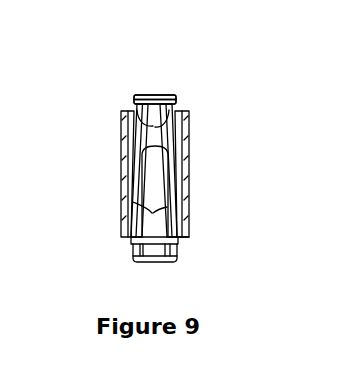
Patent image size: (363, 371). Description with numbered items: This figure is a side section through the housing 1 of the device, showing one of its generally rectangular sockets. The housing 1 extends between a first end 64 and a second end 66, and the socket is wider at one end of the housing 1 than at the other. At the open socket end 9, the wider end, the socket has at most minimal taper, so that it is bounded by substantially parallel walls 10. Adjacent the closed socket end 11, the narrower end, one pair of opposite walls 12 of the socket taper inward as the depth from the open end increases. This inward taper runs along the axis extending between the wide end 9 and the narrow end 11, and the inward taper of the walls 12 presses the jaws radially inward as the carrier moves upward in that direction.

The housing 1 is at (97, 145).
The open socket end 9 is at (130, 241).
The substantially parallel walls 10 is at (152, 213).
The closed socket end 11 is at (136, 98).
The opposite walls 12 is at (154, 127).
The first end 64 is at (178, 100).
The second end 66 is at (188, 233).